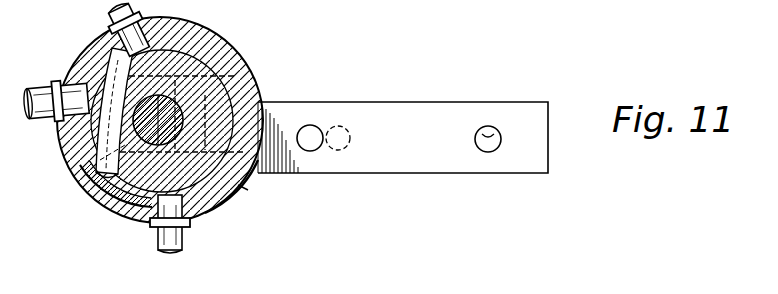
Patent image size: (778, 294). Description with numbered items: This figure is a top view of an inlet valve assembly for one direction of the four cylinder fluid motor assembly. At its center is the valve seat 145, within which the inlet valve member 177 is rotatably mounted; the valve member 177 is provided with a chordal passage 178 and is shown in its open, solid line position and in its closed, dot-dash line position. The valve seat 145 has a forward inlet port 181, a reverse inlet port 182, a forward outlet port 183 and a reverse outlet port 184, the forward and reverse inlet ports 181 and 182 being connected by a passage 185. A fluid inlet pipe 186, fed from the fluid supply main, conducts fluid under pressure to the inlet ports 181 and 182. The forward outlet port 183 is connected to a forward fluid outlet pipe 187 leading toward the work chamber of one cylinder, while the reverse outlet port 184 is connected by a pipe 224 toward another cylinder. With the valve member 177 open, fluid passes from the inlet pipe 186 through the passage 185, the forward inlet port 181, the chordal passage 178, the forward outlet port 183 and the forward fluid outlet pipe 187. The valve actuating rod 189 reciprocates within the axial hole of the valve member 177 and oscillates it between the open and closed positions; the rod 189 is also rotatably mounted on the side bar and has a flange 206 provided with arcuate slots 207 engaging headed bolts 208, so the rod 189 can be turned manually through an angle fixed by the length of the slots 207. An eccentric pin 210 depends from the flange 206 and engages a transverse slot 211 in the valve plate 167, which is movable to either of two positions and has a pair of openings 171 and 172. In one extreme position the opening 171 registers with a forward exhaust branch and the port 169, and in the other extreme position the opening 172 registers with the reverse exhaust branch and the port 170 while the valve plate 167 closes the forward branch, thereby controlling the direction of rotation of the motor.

The valve seat 145 is at (80, 57).
The valve plate 167 is at (386, 110).
The port 169 is at (488, 152).
The port 170 is at (335, 125).
The opening 171 is at (488, 127).
The opening 172 is at (318, 148).
The inlet valve member 177 is at (238, 66).
The chordal passage 178 is at (68, 149).
The forward inlet port 181 is at (78, 172).
The reverse inlet port 182 is at (150, 218).
The forward outlet port 183 is at (200, 27).
The reverse outlet port 184 is at (62, 124).
The passage 185 is at (108, 208).
The fluid inlet pipe 186 is at (190, 233).
The forward fluid outlet pipe 187 is at (116, 26).
The valve actuating rod 189 is at (228, 47).
The flange 206 is at (235, 190).
The arcuate slots 207 is at (250, 177).
The headed bolts 208 is at (254, 75).
The eccentric pin 210 is at (82, 196).
The transverse slot 211 is at (228, 205).
The pipe 224 is at (58, 88).